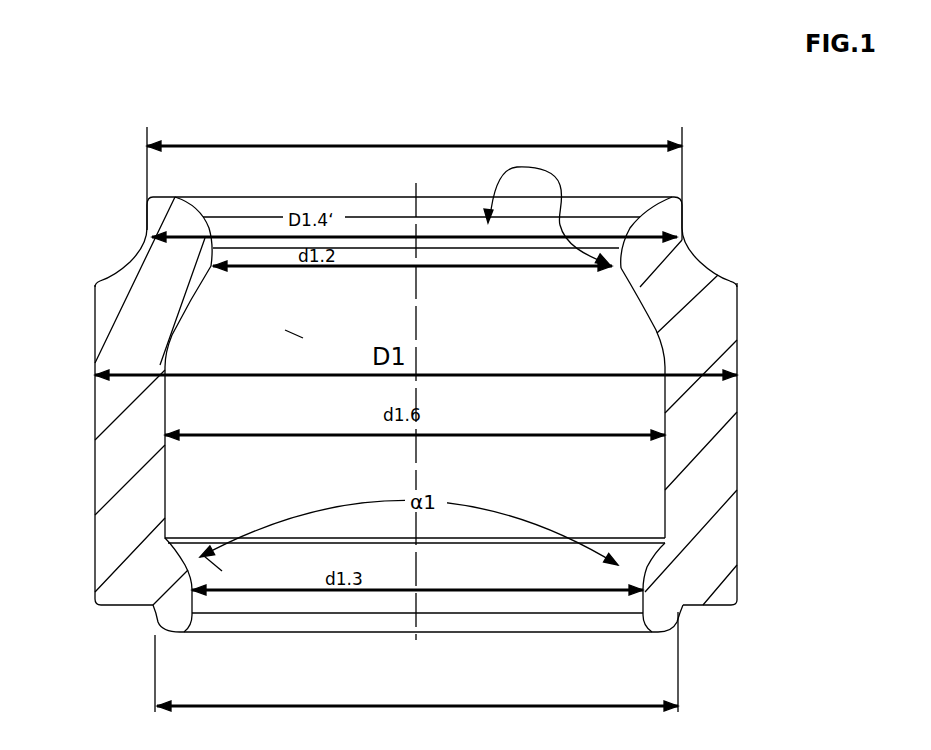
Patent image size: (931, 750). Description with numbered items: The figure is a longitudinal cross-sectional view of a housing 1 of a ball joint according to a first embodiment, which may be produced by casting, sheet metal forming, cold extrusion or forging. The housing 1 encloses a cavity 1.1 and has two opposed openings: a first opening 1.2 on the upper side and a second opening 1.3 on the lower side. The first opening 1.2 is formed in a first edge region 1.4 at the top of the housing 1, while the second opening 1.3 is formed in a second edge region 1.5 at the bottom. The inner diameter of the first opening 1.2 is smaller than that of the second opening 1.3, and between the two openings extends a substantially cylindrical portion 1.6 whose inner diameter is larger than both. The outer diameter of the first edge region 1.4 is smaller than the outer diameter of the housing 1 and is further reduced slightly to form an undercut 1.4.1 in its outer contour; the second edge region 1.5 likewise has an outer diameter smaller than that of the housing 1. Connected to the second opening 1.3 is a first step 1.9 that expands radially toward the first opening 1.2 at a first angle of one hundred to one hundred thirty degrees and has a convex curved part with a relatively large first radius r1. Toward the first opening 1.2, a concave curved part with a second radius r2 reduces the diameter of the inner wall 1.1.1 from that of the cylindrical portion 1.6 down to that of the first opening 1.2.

The housing 1 is at (722, 163).
The first edge region 1.4 is at (663, 232).
The undercut 1.4.1 is at (147, 232).
The first opening 1.2 is at (213, 273).
The cavity 1.1 is at (532, 348).
The inner wall 1.1.1 is at (667, 357).
The cylindrical portion 1.6 is at (690, 464).
The first step 1.9 is at (665, 543).
The first radius r1 is at (653, 557).
The second radius r2 is at (198, 292).
The second edge region 1.5 is at (657, 611).
The second opening 1.3 is at (472, 600).